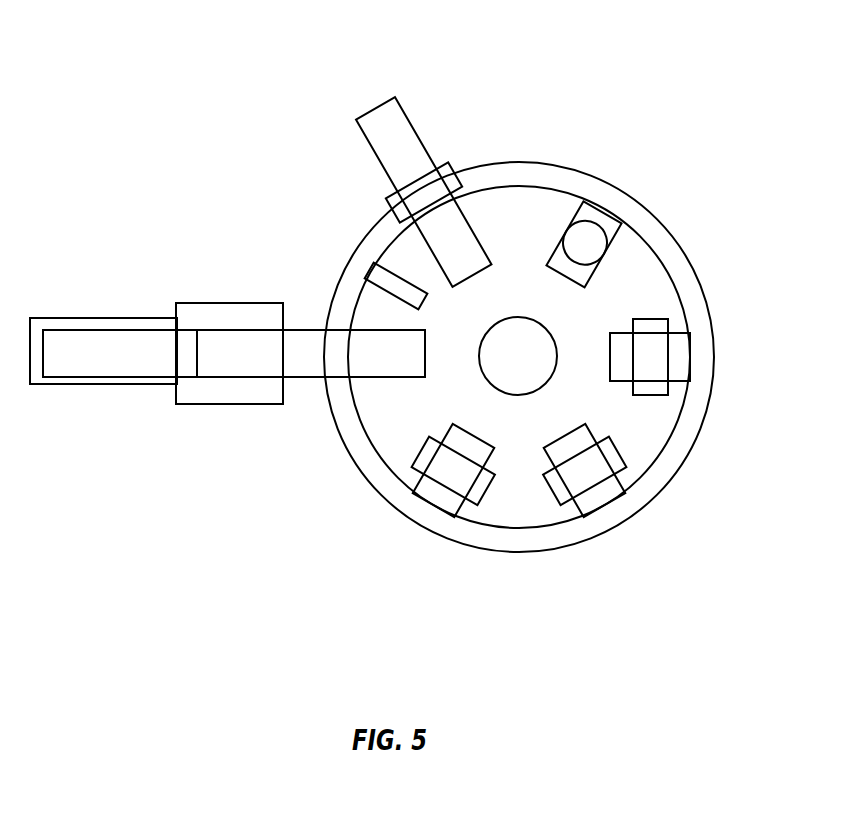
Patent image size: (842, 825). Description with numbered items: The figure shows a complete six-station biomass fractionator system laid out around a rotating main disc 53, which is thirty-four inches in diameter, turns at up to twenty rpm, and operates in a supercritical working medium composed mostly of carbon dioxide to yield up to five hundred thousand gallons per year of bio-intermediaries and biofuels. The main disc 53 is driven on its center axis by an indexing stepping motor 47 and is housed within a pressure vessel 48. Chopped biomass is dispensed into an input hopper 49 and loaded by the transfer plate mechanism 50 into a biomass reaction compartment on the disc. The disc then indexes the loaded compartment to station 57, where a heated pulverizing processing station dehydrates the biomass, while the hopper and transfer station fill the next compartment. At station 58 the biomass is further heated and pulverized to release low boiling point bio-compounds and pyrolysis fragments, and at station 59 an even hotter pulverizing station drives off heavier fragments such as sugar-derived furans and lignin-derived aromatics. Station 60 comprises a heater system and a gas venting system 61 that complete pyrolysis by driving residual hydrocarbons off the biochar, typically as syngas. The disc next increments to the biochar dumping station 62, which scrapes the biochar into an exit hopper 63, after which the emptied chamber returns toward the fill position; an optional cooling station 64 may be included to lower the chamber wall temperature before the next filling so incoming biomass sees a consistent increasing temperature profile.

The indexing stepping motor 47 is at (550, 324).
The pressure vessel 48 is at (554, 342).
The input hopper 49 is at (225, 424).
The transfer plate mechanism 50 is at (102, 400).
The main disc 53 is at (498, 182).
The station one (heated pulverizing processing station) 57 is at (403, 541).
The station two 58 is at (627, 537).
The station three (hotter pulverizing station) 59 is at (733, 352).
The station four (heater and gas venting station) 60 is at (613, 175).
The gas venting system 61 is at (607, 242).
The biochar dumping station 62 is at (410, 102).
The exit hopper 63 is at (447, 155).
The cooling station 64 is at (368, 269).